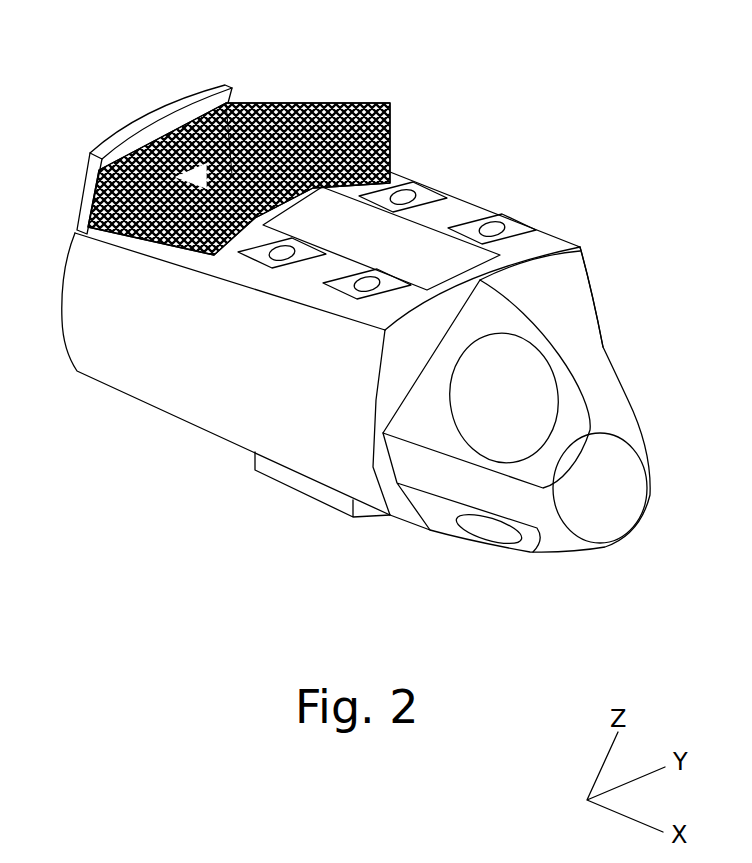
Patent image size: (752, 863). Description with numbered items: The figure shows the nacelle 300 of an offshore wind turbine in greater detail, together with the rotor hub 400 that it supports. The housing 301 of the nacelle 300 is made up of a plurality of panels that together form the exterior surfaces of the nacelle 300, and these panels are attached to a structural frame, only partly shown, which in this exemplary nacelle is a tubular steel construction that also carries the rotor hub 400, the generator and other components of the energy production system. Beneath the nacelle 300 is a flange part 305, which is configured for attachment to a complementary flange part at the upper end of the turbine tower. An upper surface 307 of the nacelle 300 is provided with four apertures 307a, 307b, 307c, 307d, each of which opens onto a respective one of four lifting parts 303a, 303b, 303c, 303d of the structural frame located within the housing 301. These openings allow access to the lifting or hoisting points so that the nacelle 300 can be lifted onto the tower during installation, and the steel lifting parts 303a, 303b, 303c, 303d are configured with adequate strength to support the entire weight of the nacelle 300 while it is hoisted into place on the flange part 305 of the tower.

The nacelle 300 is at (546, 101).
The housing 301 is at (151, 411).
The lifting part 303a is at (410, 192).
The lifting part 303b is at (278, 255).
The lifting part 303c is at (365, 286).
The lifting part 303d is at (494, 227).
The flange part 305 is at (306, 489).
The upper surface 307 is at (310, 280).
The aperture 307a is at (389, 181).
The aperture 307b is at (246, 253).
The aperture 307c is at (330, 283).
The aperture 307d is at (532, 229).
The rotor hub 400 is at (533, 505).